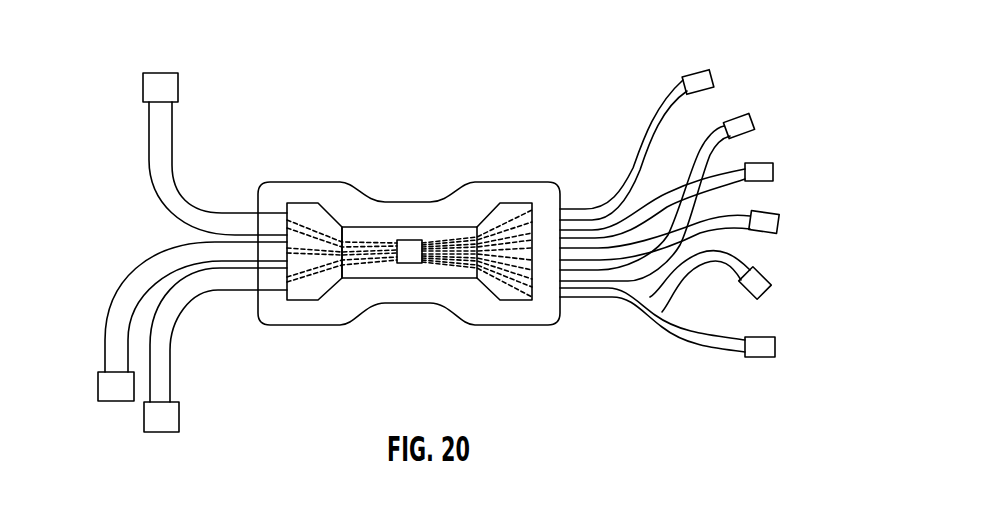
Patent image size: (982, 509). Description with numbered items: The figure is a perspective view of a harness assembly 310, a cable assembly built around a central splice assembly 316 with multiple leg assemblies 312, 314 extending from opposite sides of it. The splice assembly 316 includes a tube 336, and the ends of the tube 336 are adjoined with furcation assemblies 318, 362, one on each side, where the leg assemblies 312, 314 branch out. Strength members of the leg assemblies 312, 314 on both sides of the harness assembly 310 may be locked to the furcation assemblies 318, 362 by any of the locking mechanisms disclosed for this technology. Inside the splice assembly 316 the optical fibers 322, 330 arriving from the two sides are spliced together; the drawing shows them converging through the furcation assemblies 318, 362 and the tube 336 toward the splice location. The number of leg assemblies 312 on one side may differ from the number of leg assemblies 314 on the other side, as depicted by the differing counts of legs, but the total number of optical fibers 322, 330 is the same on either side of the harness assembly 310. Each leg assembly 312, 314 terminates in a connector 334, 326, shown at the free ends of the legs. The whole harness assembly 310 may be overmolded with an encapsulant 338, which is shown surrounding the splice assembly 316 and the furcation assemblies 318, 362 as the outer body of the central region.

The harness assembly 310 is at (589, 452).
The leg assemblies 312 is at (645, 200).
The leg assemblies 314 is at (192, 198).
The splice assembly 316 is at (385, 236).
The furcation assembly 318 is at (500, 278).
The optical fibers 322 is at (452, 232).
The connector 326 is at (700, 72).
The optical fibers 330 is at (317, 227).
The connector 334 is at (160, 92).
The tube 336 is at (380, 279).
The encapsulant 338 is at (447, 296).
The furcation assembly 362 is at (312, 281).